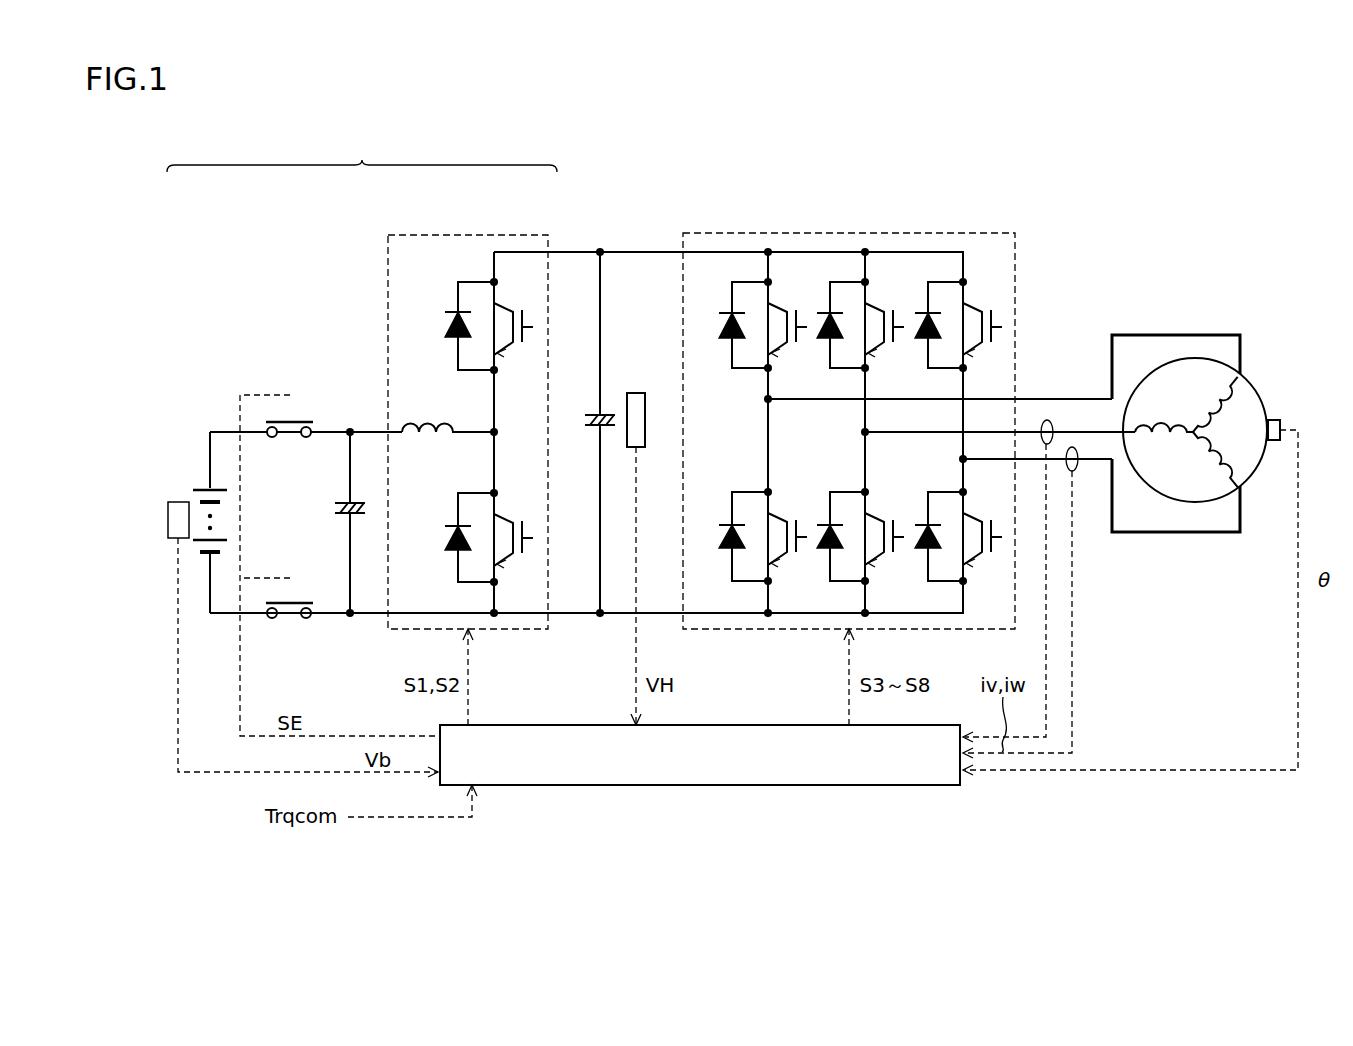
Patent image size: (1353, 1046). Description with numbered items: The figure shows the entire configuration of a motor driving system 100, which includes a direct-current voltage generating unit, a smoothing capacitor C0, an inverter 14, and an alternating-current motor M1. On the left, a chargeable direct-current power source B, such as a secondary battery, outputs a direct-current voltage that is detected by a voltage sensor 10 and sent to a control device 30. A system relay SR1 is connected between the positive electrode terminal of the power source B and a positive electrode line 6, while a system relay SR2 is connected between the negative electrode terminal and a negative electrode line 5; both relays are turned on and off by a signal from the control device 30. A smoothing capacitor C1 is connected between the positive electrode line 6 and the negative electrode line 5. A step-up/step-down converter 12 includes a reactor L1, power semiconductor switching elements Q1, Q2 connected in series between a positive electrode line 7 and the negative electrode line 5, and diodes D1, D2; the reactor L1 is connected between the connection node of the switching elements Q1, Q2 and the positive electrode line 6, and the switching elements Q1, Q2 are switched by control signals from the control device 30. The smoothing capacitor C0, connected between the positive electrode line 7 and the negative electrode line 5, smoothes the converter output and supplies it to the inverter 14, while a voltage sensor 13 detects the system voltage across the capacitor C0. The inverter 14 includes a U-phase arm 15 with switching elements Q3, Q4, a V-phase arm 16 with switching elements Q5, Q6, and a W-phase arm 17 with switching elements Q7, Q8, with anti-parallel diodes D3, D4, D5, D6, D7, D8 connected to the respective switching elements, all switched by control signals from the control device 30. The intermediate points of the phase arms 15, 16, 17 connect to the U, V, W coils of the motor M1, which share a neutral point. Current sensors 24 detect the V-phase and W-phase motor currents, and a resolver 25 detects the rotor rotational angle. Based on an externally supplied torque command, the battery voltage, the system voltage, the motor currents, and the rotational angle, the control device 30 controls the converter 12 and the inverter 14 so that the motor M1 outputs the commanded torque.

The motor driving system 100 is at (628, 164).
The step-up/step-down converter 12 is at (471, 235).
The positive electrode line 7 is at (636, 252).
The negative electrode line 5 is at (575, 621).
The inverter 14 is at (846, 233).
The voltage sensor 13 is at (636, 393).
The smoothing capacitor C0 is at (598, 414).
The direct-current power source B is at (200, 488).
The voltage sensor 10 is at (168, 505).
The system relay SR1 is at (304, 420).
The system relay SR2 is at (304, 601).
The positive electrode line 6 is at (352, 431).
The smoothing capacitor C1 is at (341, 505).
The reactor L1 is at (422, 420).
The power semiconductor switching element Q1 is at (513, 326).
The power semiconductor switching element Q2 is at (513, 537).
The switching element Q3 is at (787, 325).
The switching element Q4 is at (787, 536).
The switching element Q5 is at (884, 325).
The switching element Q6 is at (884, 536).
The switching element Q7 is at (982, 325).
The switching element Q8 is at (982, 536).
The diode D1 is at (454, 326).
The diode D2 is at (454, 537).
The anti-parallel diode D3 is at (733, 325).
The anti-parallel diode D4 is at (733, 536).
The anti-parallel diode D5 is at (830, 328).
The anti-parallel diode D6 is at (830, 540).
The anti-parallel diode D7 is at (928, 328).
The anti-parallel diode D8 is at (928, 540).
The U-phase arm 15 is at (728, 410).
The V-phase arm 16 is at (827, 430).
The W-phase arm 17 is at (924, 455).
The current sensors 24 is at (1047, 420).
The alternating-current motor M1 is at (1252, 392).
The resolver 25 is at (1281, 420).
The control device 30 is at (761, 725).